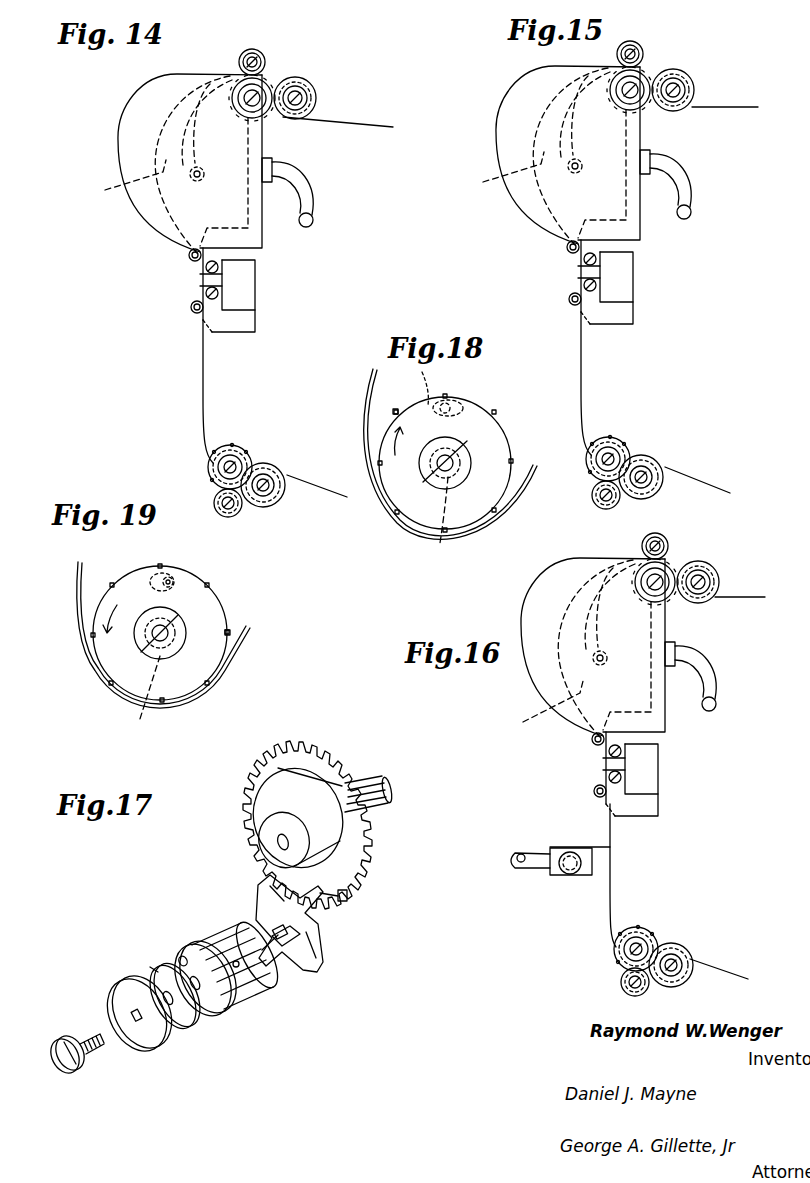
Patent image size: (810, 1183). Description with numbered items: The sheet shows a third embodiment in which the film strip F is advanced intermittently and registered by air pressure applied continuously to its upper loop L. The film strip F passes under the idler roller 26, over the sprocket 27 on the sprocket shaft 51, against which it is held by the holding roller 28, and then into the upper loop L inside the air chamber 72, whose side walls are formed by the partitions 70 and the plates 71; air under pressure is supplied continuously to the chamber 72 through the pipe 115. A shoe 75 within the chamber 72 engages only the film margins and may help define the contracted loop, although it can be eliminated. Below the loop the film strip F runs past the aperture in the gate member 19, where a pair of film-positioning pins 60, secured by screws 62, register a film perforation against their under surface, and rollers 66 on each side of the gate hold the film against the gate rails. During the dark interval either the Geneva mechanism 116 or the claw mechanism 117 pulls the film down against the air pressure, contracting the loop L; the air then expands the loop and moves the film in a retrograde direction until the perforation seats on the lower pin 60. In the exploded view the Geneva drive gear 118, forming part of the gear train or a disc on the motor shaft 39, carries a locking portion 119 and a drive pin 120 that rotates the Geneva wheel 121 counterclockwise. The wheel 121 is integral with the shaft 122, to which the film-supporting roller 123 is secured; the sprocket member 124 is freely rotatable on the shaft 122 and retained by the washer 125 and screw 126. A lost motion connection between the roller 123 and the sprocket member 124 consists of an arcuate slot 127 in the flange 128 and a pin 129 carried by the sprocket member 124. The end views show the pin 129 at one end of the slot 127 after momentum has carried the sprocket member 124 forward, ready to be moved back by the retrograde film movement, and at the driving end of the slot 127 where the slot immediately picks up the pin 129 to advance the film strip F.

In FIG. 14, the gate member 19 is at (250, 298).
In FIG. 15, the gate member 19 is at (626, 282).
In FIG. 16, the gate member 19 is at (653, 774).
In FIG. 14, the idler roller 26 is at (306, 84).
In FIG. 15, the idler roller 26 is at (694, 80).
In FIG. 16, the idler roller 26 is at (718, 575).
In FIG. 14, the sprocket 27 is at (262, 84).
In FIG. 15, the sprocket 27 is at (661, 71).
In FIG. 16, the sprocket 27 is at (682, 563).
In FIG. 14, the holding roller 28 is at (257, 50).
In FIG. 15, the holding roller 28 is at (648, 41).
In FIG. 16, the holding roller 28 is at (665, 533).
In FIG. 17, the motor shaft 39 is at (278, 842).
In FIG. 14, the sprocket shaft 51 is at (265, 110).
In FIG. 15, the sprocket shaft 51 is at (651, 102).
In FIG. 16, the sprocket shaft 51 is at (671, 598).
In FIG. 14, the film-positioning pins 60 is at (200, 287).
In FIG. 15, the film-positioning pins 60 is at (561, 287).
In FIG. 16, the film-positioning pins 60 is at (581, 769).
In FIG. 14, the screws 62 is at (218, 292).
In FIG. 15, the screws 62 is at (635, 266).
In FIG. 16, the screws 62 is at (655, 763).
In FIG. 14, the rollers 66 is at (189, 255).
In FIG. 15, the rollers 66 is at (552, 292).
In FIG. 16, the rollers 66 is at (571, 767).
In FIG. 14, the partitions 70 is at (253, 210).
In FIG. 15, the partitions 70 is at (629, 174).
In FIG. 16, the partitions 70 is at (652, 666).
In FIG. 14, the plates 71 is at (128, 150).
In FIG. 15, the plates 71 is at (544, 153).
In FIG. 16, the plates 71 is at (579, 645).
In FIG. 14, the air chamber 72 is at (121, 107).
In FIG. 15, the air chamber 72 is at (549, 155).
In FIG. 16, the air chamber 72 is at (572, 647).
In FIG. 14, the shoe 75 is at (163, 122).
In FIG. 15, the shoe 75 is at (563, 157).
In FIG. 16, the shoe 75 is at (580, 649).
In FIG. 14, the upper loop L is at (128, 181).
In FIG. 15, the upper loop L is at (510, 180).
In FIG. 16, the upper loop L is at (549, 705).
In FIG. 14, the film strip F is at (330, 118).
In FIG. 15, the film strip F is at (713, 284).
In FIG. 16, the film strip F is at (734, 771).
In FIG. 18, the film strip F is at (367, 442).
In FIG. 19, the film strip F is at (80, 598).
In FIG. 14, the pipe 115 is at (312, 180).
In FIG. 15, the pipe 115 is at (693, 184).
In FIG. 16, the pipe 115 is at (716, 676).
In FIG. 14, the Geneva mechanism 116 is at (245, 441).
In FIG. 15, the Geneva mechanism 116 is at (628, 410).
In FIG. 16, the Geneva mechanism 116 is at (651, 900).
In FIG. 17, the Geneva mechanism 116 is at (350, 927).
In FIG. 16, the claw mechanism 117 is at (560, 843).
In FIG. 17, the Geneva drive gear 118 is at (330, 740).
In FIG. 17, the locking portion 119 is at (300, 806).
In FIG. 17, the drive pin 120 is at (349, 897).
In FIG. 17, the Geneva wheel 121 is at (323, 957).
In FIG. 18, the shaft 122 is at (423, 521).
In FIG. 19, the shaft 122 is at (131, 694).
In FIG. 17, the shaft 122 is at (276, 955).
In FIG. 17, the film-supporting roller 123 is at (205, 943).
In FIG. 18, the sprocket member 124 is at (394, 412).
In FIG. 19, the sprocket member 124 is at (228, 633).
In FIG. 17, the sprocket member 124 is at (178, 1033).
In FIG. 18, the washer 125 is at (403, 483).
In FIG. 19, the washer 125 is at (183, 677).
In FIG. 17, the washer 125 is at (120, 993).
In FIG. 18, the screw 126 is at (466, 475).
In FIG. 19, the screw 126 is at (181, 646).
In FIG. 17, the screw 126 is at (80, 1068).
In FIG. 18, the arcuate slot 127 is at (482, 410).
In FIG. 19, the arcuate slot 127 is at (178, 583).
In FIG. 17, the arcuate slot 127 is at (172, 970).
In FIG. 17, the flange 128 is at (213, 1007).
In FIG. 18, the pin 129 is at (406, 384).
In FIG. 19, the pin 129 is at (198, 543).
In FIG. 17, the pin 129 is at (148, 960).